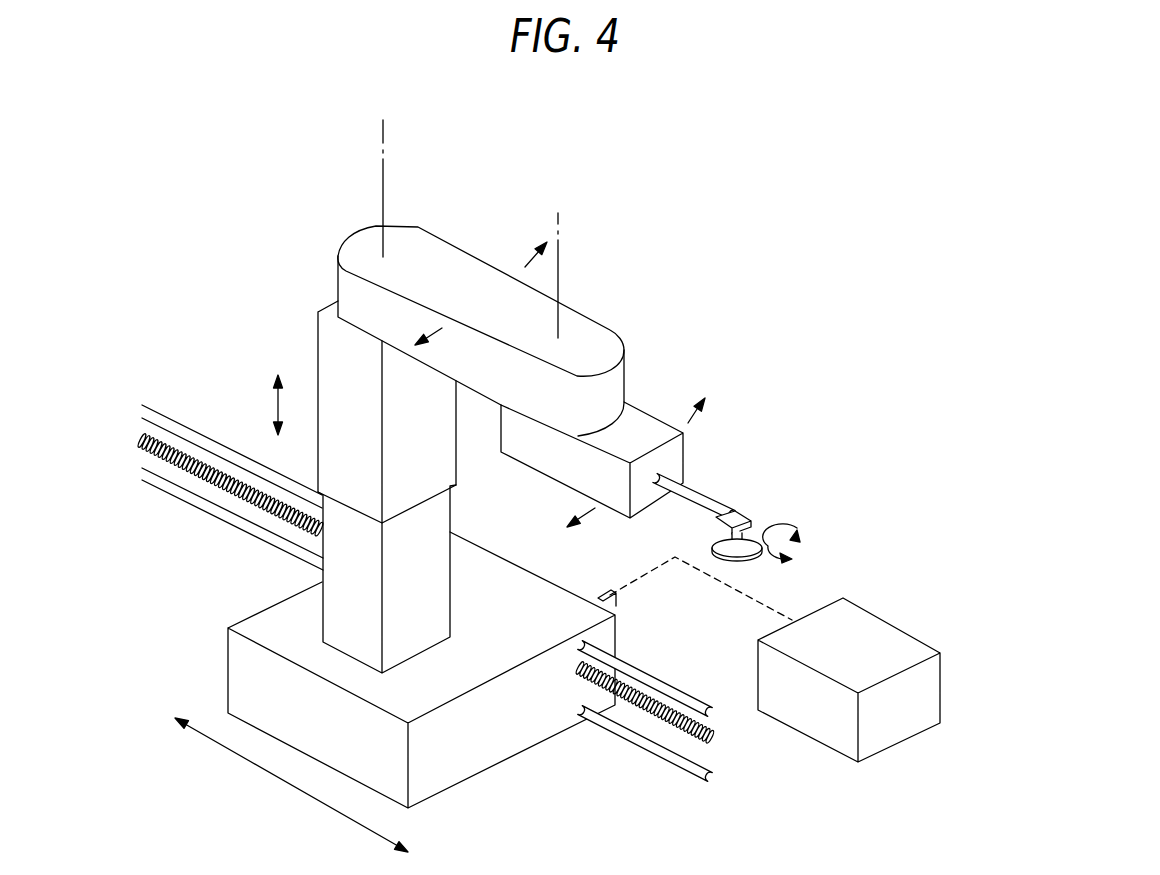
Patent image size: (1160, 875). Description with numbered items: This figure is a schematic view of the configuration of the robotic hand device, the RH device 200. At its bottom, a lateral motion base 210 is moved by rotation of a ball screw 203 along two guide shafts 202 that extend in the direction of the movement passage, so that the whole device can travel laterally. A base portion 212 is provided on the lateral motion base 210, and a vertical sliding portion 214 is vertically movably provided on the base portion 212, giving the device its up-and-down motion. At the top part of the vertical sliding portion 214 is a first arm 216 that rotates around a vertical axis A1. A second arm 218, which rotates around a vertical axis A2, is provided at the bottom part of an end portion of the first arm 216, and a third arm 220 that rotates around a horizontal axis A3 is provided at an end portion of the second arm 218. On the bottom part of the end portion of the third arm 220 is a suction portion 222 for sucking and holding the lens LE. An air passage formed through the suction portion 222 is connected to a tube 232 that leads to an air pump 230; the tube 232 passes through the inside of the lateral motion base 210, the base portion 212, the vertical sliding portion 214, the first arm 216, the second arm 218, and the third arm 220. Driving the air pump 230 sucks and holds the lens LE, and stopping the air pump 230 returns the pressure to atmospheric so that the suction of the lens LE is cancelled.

The RH device 200 is at (489, 512).
The lateral motion base 210 is at (440, 762).
The base portion 212 is at (430, 523).
The vertical sliding portion 214 is at (330, 354).
The first arm 216 is at (415, 253).
The second arm 218 is at (637, 433).
The third arm 220 is at (703, 497).
The suction portion 222 is at (716, 545).
The tube 232 is at (620, 602).
The guide shafts 202 is at (618, 658).
The ball screw 203 is at (715, 742).
The air pump 230 is at (884, 616).
The vertical axis A1 is at (383, 205).
The vertical axis A2 is at (560, 252).
The horizontal axis A3 is at (757, 531).
The lens LE is at (737, 552).